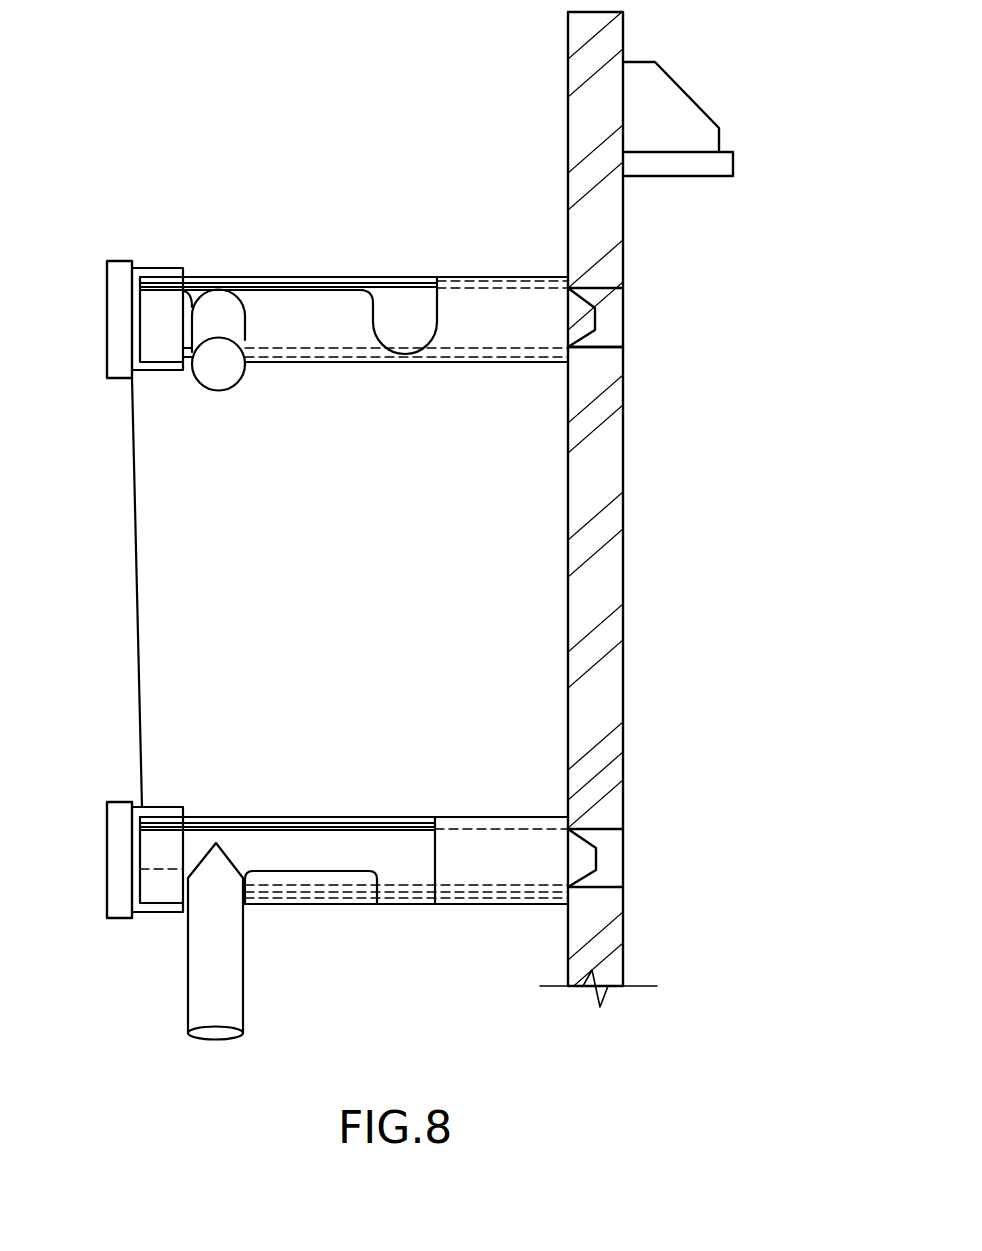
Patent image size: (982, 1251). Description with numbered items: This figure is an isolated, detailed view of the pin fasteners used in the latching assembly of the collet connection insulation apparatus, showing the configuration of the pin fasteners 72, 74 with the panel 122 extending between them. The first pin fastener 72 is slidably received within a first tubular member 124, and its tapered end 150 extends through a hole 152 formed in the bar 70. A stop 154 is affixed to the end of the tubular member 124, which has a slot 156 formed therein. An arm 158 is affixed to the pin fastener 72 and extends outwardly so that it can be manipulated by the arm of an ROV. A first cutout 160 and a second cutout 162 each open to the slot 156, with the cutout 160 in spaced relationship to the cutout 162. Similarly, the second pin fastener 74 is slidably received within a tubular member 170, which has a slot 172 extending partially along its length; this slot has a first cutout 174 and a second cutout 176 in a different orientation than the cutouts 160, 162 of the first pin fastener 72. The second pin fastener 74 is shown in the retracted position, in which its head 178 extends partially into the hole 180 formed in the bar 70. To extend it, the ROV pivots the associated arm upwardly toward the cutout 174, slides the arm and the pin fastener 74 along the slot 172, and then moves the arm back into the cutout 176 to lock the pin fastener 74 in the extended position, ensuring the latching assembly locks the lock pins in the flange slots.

The bar 70 is at (617, 232).
The pin fastener 72 is at (473, 334).
The second pin fastener 74 is at (354, 861).
The panel 122 is at (150, 618).
The first tubular member 124 is at (354, 328).
The tapered end 150 is at (597, 311).
The hole 152 is at (617, 343).
The stop 154 is at (122, 293).
The slot 156 is at (337, 283).
The arm 158 is at (228, 376).
The first cutout 160 is at (247, 308).
The second cutout 162 is at (402, 359).
The tubular member 170 is at (472, 905).
The slot 172 is at (312, 838).
The first cutout 174 is at (246, 907).
The second cutout 176 is at (400, 897).
The head 178 is at (597, 853).
The hole 180 is at (207, 998).